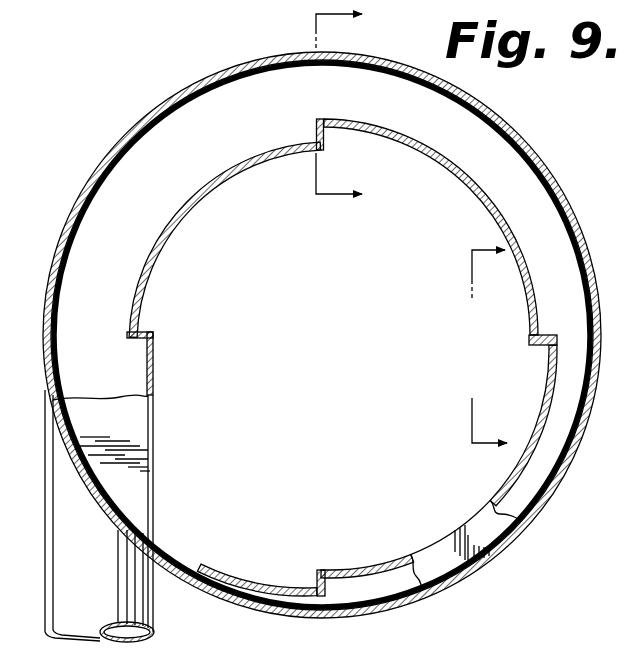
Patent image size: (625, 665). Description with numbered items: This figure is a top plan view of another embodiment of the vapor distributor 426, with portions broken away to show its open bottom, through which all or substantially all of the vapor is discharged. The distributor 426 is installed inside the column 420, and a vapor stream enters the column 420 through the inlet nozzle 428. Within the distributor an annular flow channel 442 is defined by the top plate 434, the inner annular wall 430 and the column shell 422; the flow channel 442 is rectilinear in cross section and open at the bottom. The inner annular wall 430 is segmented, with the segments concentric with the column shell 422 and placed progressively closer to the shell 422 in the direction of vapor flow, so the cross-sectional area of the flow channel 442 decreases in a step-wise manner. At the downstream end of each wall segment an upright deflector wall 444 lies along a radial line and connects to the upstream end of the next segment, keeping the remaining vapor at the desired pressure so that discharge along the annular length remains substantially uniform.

The column 420 is at (322, 327).
The column shell 422 is at (152, 116).
The distributor 426 is at (158, 350).
The inlet nozzle 428 is at (160, 617).
The inner annular wall 430 is at (183, 204).
The top plate 434 is at (143, 422).
The flow channel 442 is at (126, 252).
The deflector wall 444 is at (328, 132).